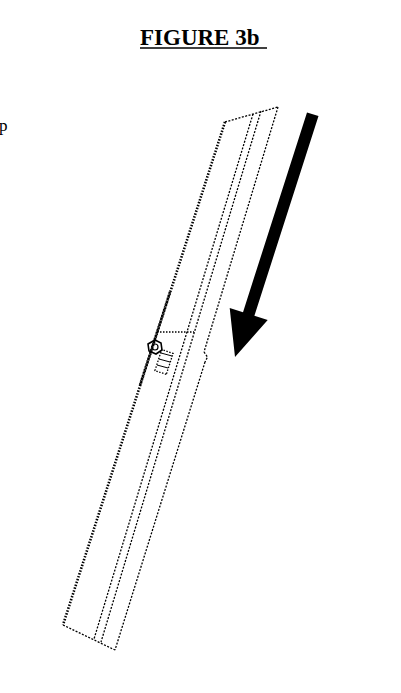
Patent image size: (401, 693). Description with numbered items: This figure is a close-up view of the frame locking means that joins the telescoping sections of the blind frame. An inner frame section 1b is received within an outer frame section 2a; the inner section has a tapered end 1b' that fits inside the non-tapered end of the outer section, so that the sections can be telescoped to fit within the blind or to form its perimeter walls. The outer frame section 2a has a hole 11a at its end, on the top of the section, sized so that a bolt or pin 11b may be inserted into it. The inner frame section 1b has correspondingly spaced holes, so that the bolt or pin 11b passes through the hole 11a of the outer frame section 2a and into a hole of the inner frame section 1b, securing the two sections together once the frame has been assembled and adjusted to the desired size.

The inner frame section 1b is at (170, 372).
The tapered end of frame section 1b' is at (151, 301).
The outer frame section 2a is at (191, 380).
The hole 11a is at (160, 366).
The bolt or pin 11b is at (147, 345).